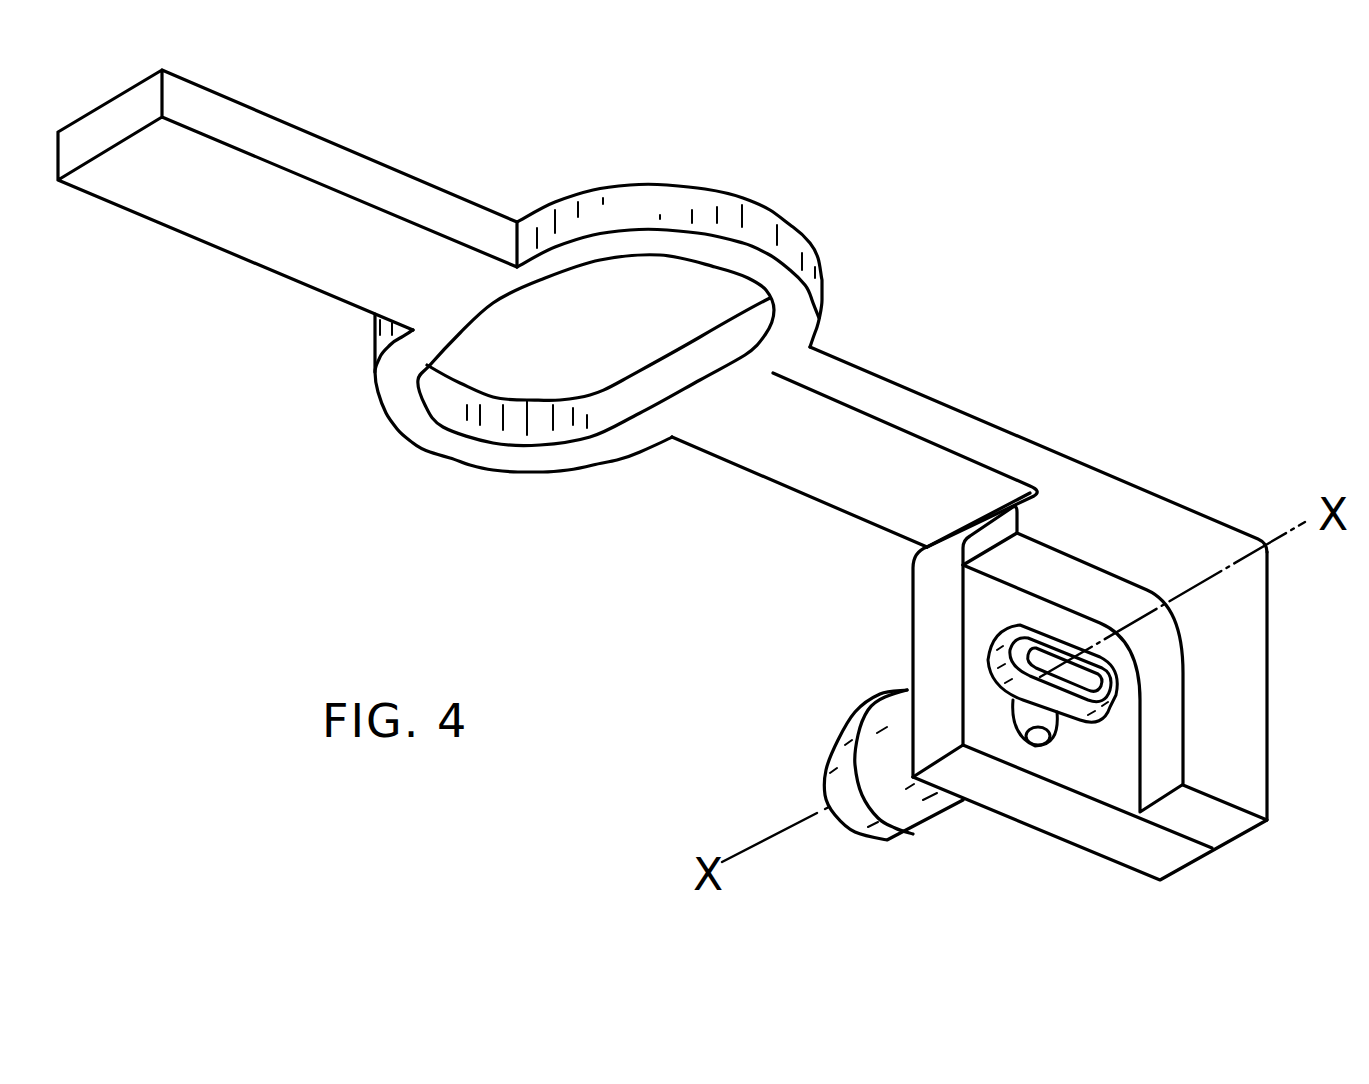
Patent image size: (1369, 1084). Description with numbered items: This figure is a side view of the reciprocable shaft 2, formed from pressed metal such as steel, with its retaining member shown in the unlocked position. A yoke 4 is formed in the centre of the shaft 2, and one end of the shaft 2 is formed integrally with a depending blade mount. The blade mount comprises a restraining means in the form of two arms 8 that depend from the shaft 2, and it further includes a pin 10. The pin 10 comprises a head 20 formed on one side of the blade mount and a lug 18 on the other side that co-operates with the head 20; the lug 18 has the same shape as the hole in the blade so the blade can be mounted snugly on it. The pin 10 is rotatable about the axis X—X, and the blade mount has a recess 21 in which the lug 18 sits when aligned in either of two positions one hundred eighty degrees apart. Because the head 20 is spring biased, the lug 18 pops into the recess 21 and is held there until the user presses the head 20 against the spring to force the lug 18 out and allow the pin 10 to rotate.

The shaft 2 is at (883, 378).
The yoke 4 is at (413, 440).
The arms 8 is at (1177, 857).
The pin 10 is at (870, 807).
The lug 18 is at (1012, 632).
The head 20 is at (823, 780).
The recess 21 is at (1026, 742).